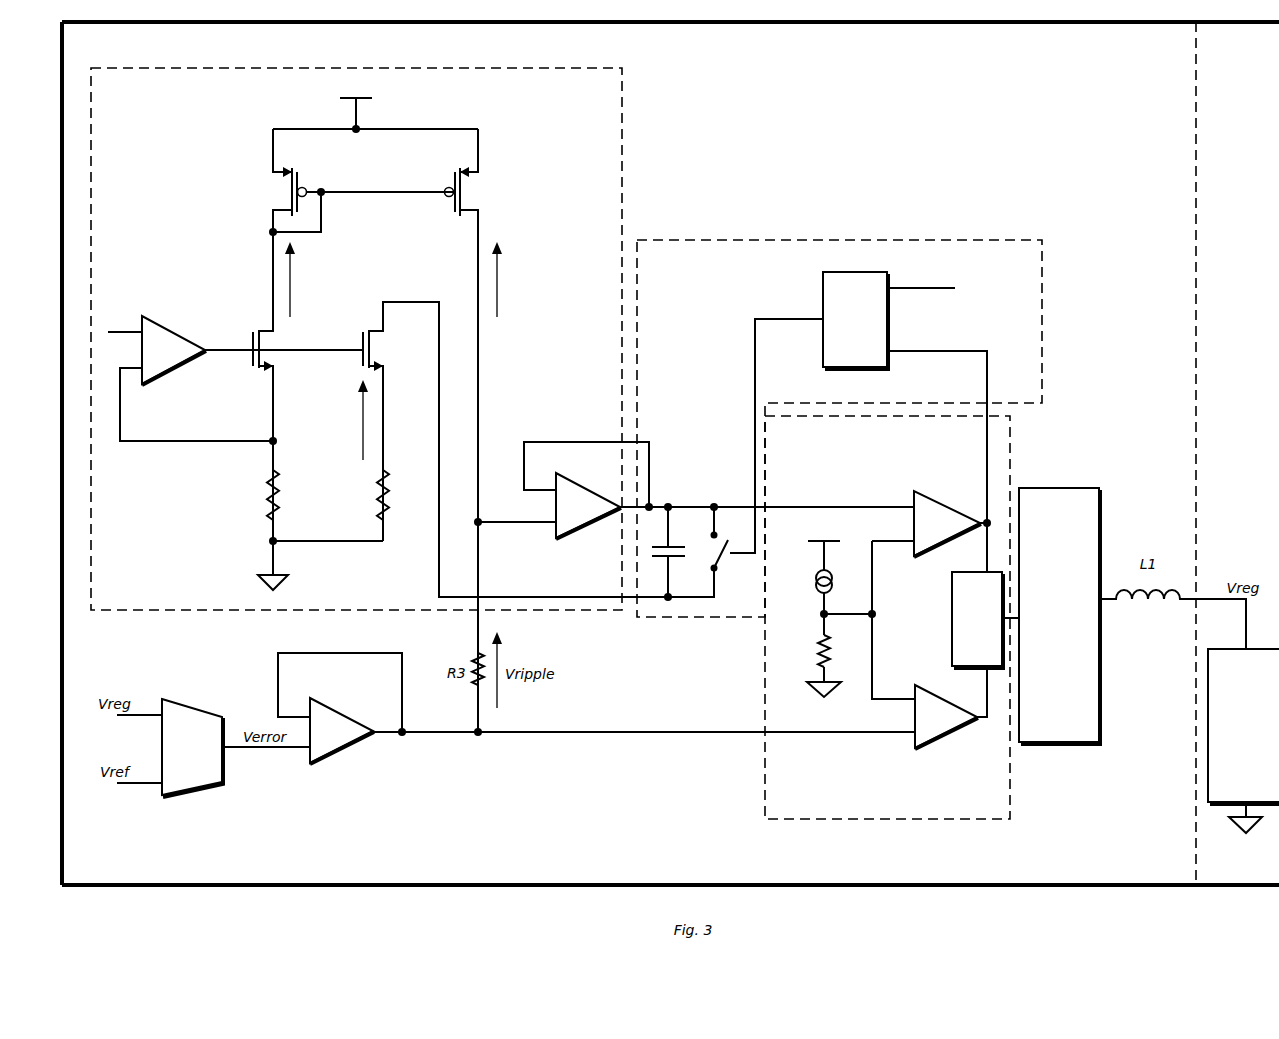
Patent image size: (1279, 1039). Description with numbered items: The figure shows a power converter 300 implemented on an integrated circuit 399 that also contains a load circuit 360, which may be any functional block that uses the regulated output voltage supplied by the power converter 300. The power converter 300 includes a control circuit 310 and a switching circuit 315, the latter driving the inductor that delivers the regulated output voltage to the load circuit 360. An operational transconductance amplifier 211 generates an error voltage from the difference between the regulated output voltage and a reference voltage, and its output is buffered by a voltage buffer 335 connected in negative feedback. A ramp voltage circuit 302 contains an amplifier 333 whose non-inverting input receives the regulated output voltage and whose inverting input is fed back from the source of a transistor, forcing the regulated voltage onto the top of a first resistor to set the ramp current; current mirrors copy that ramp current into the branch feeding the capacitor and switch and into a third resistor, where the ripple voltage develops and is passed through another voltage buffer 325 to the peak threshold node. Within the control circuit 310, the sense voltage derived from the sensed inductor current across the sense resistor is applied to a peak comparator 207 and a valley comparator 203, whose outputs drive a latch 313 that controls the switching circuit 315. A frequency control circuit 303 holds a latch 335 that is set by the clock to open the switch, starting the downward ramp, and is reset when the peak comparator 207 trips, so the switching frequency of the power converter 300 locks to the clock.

The power converter 300 is at (716, 80).
The ramp voltage circuit 302 is at (288, 68).
The frequency control circuit 303 is at (765, 240).
The control circuit 310 is at (767, 819).
The latch 313 is at (985, 620).
The switching circuit 315 is at (1059, 616).
The voltage buffer 325 is at (590, 475).
The amplifier 333 is at (167, 332).
The latch 335 is at (358, 752).
The load circuit 360 is at (1243, 741).
The integrated circuit 399 is at (670, 453).
The valley comparator 203 is at (940, 745).
The peak comparator 207 is at (947, 490).
The operational transconductance amplifier 211 is at (213, 748).